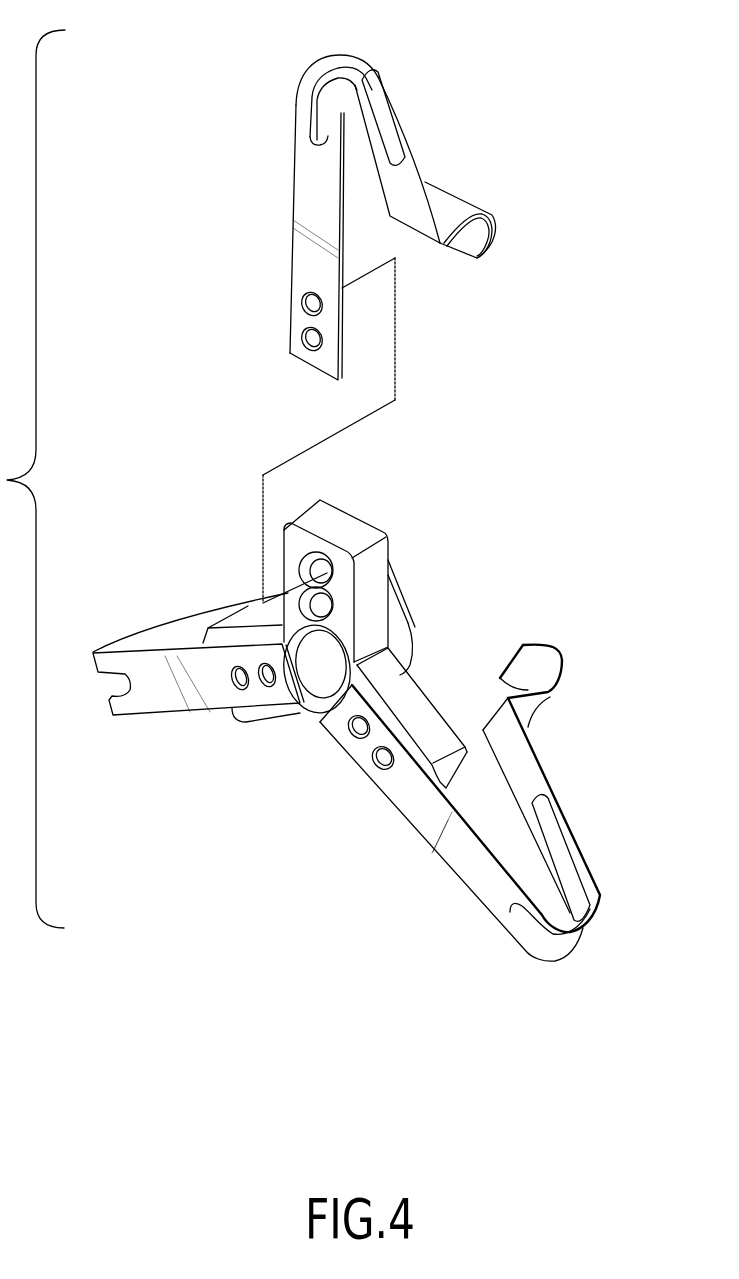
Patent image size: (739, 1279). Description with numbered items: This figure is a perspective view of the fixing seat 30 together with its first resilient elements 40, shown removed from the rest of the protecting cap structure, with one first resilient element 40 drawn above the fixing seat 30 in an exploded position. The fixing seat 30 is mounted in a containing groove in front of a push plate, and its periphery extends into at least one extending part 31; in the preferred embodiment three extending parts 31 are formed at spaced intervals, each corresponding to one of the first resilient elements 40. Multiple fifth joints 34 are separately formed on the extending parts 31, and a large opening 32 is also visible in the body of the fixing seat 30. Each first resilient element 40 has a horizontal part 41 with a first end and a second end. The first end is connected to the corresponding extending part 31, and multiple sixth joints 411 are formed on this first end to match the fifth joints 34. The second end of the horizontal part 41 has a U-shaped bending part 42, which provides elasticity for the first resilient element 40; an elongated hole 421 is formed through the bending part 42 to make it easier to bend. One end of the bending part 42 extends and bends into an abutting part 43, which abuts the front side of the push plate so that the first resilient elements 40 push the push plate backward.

The fixing seat 30 is at (375, 537).
The extending part 31 is at (432, 707).
The through hole 32 is at (327, 687).
The fifth joint 34 is at (313, 567).
The first resilient element 40 is at (152, 715).
The horizontal part 41 is at (288, 267).
The sixth joint 411 is at (303, 307).
The bending part 42 is at (315, 67).
The elongated hole 421 is at (352, 63).
The abutting part 43 is at (457, 200).